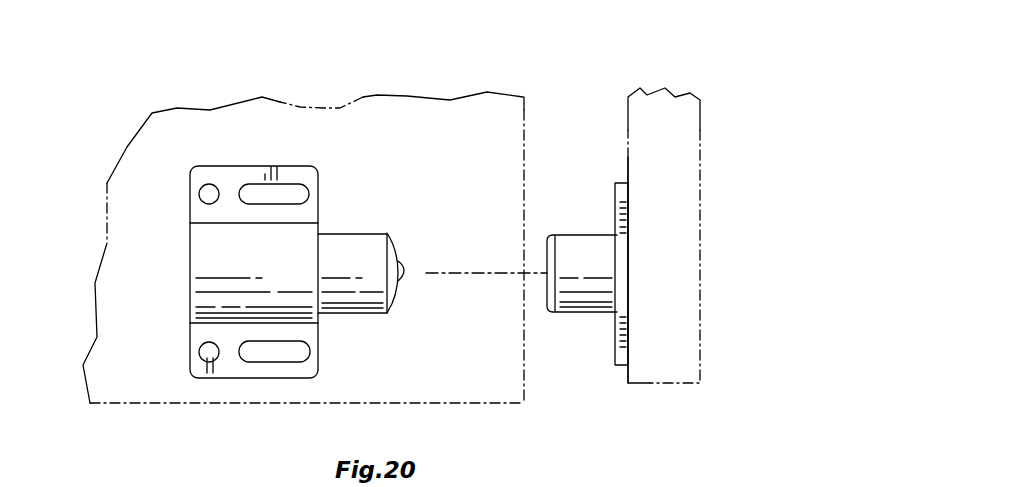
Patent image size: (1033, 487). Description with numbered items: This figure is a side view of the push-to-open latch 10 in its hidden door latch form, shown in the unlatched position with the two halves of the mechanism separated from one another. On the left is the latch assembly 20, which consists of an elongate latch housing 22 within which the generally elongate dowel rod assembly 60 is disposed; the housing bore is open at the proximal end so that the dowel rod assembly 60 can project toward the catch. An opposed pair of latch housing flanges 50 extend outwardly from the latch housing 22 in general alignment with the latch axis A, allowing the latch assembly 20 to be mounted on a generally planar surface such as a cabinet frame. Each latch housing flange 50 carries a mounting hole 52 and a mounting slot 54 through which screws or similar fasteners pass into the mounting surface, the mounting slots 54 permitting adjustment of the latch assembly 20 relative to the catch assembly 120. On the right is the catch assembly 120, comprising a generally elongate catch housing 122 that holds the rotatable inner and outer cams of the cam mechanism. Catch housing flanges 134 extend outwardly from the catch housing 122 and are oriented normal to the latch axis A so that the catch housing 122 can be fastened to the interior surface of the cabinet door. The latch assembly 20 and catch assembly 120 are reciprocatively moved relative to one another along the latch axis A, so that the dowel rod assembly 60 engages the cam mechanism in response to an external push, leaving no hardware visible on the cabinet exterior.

The push-to-open latch 10 is at (642, 45).
The latch assembly 20 is at (160, 287).
The latch housing 22 is at (357, 233).
The latch housing flanges 50 is at (247, 165).
The mounting hole 52 is at (207, 184).
The mounting slot 54 is at (296, 186).
The dowel rod assembly 60 is at (408, 276).
The catch assembly 120 is at (574, 352).
The catch housing 122 is at (583, 233).
The catch housing flanges 134 is at (623, 263).
The latch axis A is at (493, 274).